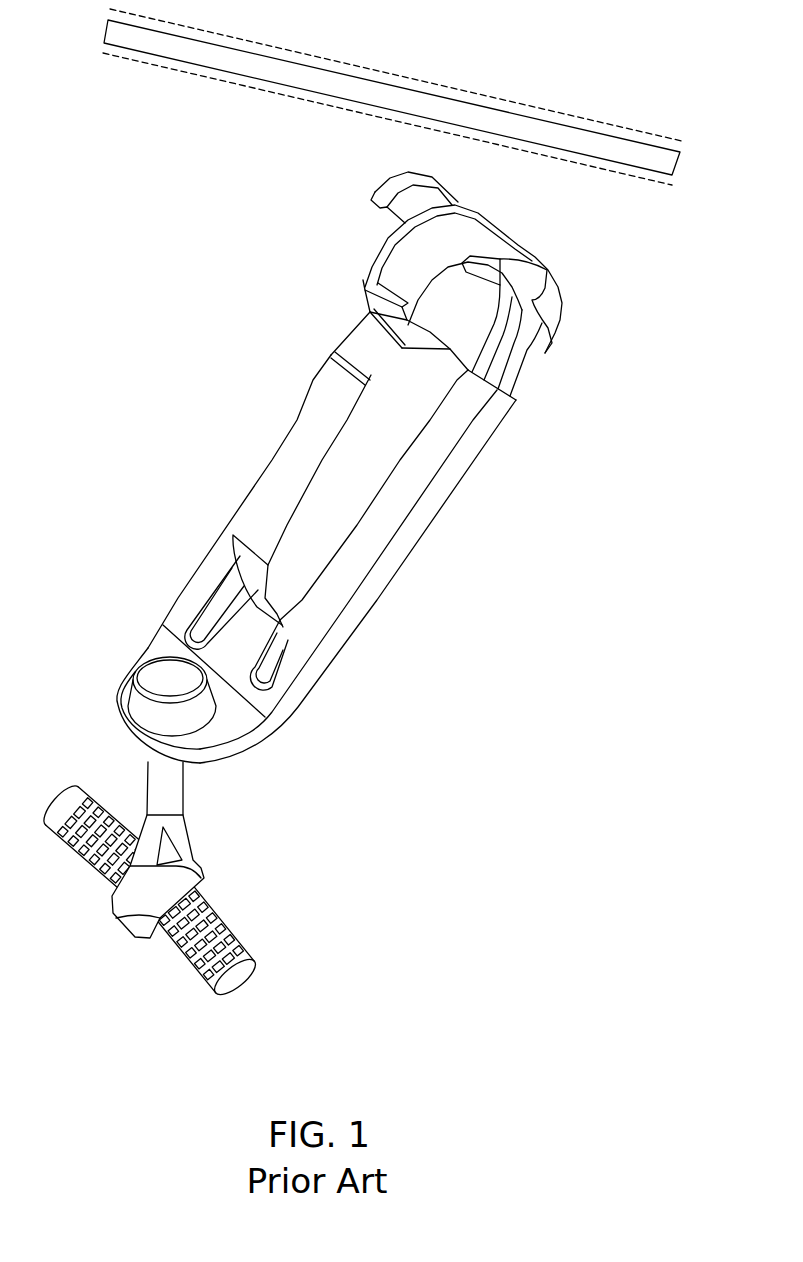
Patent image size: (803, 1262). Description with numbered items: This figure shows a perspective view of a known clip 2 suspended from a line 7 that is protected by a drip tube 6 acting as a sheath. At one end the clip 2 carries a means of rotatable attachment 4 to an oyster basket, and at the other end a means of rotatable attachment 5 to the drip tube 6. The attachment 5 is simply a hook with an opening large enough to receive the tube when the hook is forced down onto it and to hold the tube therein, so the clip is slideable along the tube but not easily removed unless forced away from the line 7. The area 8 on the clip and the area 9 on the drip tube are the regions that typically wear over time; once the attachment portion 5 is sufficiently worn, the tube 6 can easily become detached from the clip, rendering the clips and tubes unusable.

The clip 2 is at (313, 586).
The means of rotatable attachment to an oyster basket 4 is at (68, 868).
The means of rotatable attachment to a drip tube 5 is at (481, 314).
The drip tube 6 is at (357, 62).
The line 7 is at (437, 94).
The wear area on the clip 8 is at (548, 352).
The wear area on the drip tube 9 is at (515, 150).